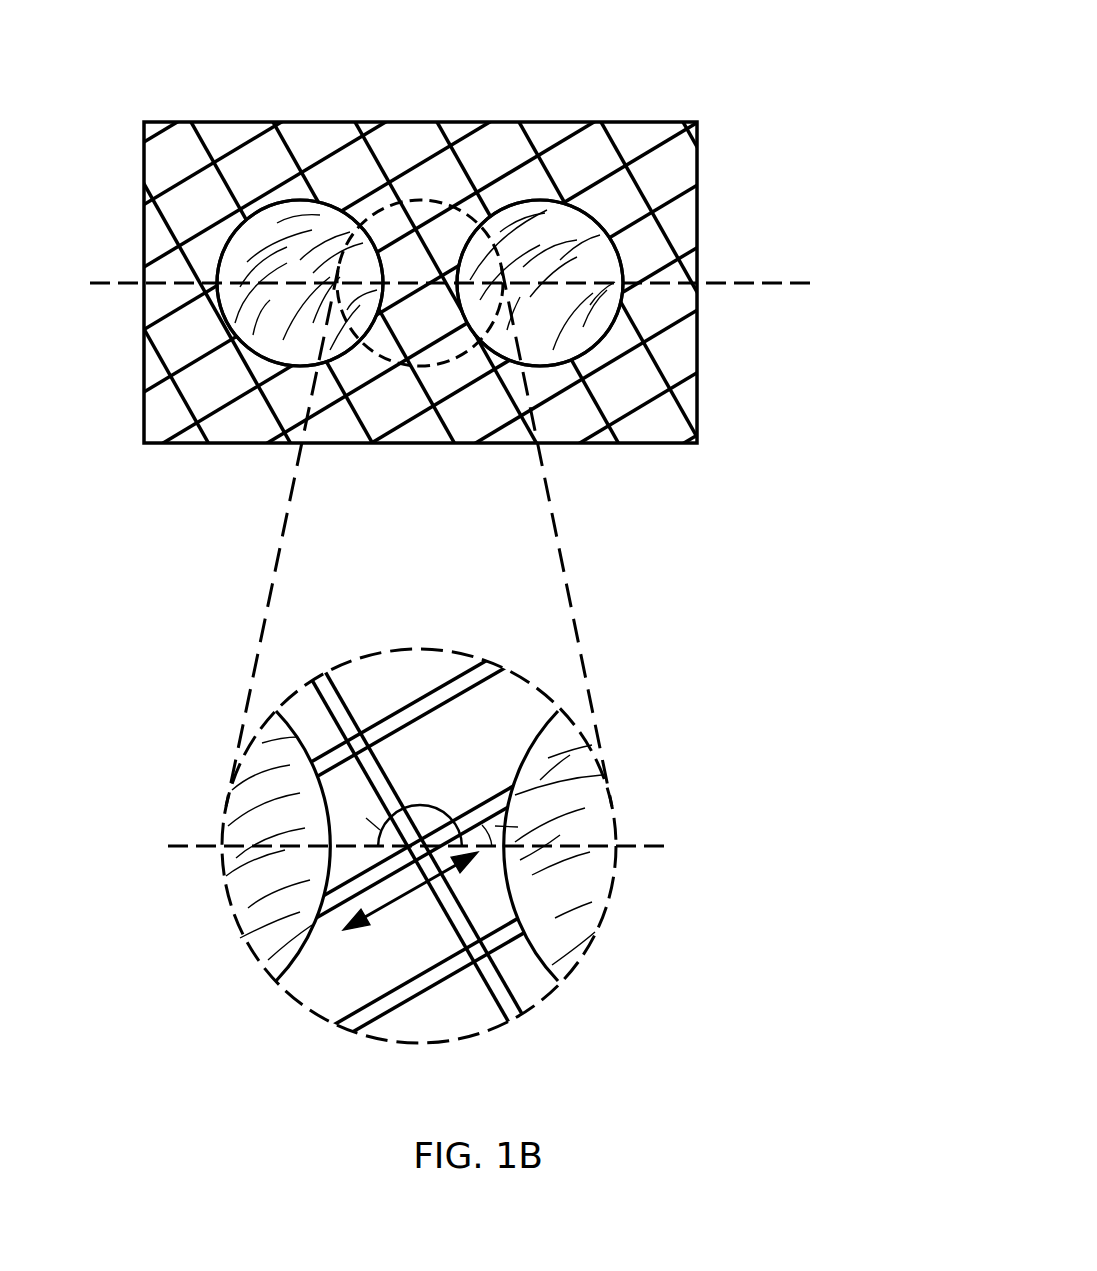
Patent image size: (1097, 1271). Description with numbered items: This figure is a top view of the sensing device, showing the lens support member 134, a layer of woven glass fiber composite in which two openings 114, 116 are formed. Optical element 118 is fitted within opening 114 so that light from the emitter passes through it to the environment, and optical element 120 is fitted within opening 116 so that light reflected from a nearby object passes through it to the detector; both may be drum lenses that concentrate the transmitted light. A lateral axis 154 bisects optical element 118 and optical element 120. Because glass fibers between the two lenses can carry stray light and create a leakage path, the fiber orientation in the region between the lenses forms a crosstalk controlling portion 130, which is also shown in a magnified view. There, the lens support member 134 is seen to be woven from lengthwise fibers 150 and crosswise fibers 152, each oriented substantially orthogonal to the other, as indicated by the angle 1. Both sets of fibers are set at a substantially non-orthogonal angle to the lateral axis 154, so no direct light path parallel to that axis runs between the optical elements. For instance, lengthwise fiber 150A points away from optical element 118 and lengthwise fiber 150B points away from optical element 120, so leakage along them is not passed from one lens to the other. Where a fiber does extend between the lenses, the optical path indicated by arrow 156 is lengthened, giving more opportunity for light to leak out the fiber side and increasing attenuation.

The lens support member 134 is at (672, 123).
The optical element 120 is at (282, 1022).
The optical element 118 is at (612, 232).
The opening 116 is at (236, 229).
The opening 114 is at (622, 265).
The crosswise fibers 152 is at (350, 708).
The lengthwise fibers 150 is at (488, 800).
The lengthwise fiber 150A is at (338, 742).
The lengthwise fiber 150B is at (445, 988).
The lateral axis 154 is at (767, 284).
The crosstalk controlling portion 130 is at (478, 342).
The arrow 156 is at (393, 905).
The Angle 1 is at (418, 805).